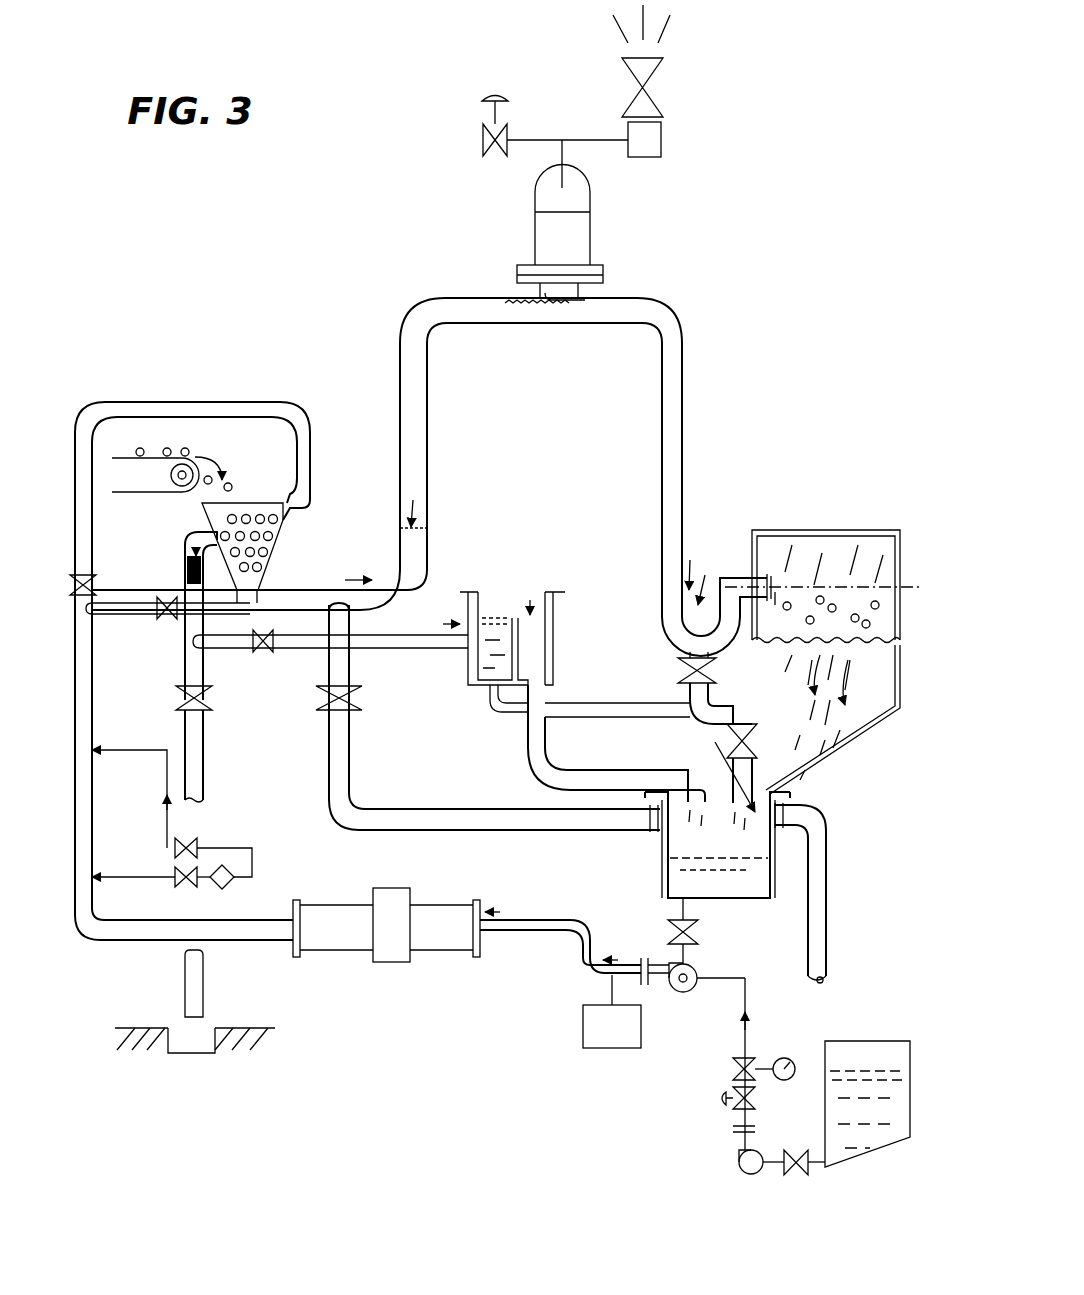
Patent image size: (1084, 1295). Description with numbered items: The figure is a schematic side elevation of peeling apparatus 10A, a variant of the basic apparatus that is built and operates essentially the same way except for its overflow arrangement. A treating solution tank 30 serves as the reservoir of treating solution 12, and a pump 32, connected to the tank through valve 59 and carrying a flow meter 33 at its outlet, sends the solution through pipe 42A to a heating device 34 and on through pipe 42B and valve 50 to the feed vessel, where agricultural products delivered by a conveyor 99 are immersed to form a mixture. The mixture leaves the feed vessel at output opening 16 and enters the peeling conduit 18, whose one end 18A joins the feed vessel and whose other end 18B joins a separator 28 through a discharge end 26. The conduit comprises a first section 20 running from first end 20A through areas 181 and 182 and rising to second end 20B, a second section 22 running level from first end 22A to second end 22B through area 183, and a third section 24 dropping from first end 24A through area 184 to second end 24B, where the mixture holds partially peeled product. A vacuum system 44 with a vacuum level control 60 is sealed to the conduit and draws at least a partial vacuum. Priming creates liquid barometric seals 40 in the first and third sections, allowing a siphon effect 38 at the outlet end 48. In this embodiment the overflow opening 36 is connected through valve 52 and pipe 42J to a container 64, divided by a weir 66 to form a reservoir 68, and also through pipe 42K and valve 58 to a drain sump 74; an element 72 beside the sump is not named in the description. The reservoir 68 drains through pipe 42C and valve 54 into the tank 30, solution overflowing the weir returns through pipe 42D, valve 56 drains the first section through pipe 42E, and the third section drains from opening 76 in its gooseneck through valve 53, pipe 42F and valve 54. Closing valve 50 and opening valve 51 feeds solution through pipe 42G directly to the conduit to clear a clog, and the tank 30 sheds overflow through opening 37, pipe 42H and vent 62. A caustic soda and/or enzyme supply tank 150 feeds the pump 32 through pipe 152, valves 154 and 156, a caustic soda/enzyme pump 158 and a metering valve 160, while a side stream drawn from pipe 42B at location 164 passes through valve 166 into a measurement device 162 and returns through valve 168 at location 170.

The peeling apparatus 10A is at (258, 312).
The treating solution 12 is at (260, 400).
The output opening 16 is at (230, 618).
The peeling conduit 18 is at (393, 320).
The one end of peeling conduit 18A is at (307, 584).
The other end of peeling conduit 18B is at (652, 622).
The first section 20 is at (388, 456).
The first end of first section 20A is at (266, 575).
The second end of first section 20B is at (395, 352).
The second section 22 is at (458, 290).
The first end of second section 22A is at (427, 297).
The second end of second section 22B is at (682, 298).
The third section 24 is at (690, 385).
The first end of third section 24A is at (688, 327).
The second end of third section 24B is at (740, 640).
The discharge end 26 is at (738, 575).
The separator 28 is at (880, 530).
The treating solution tank 30 is at (728, 875).
The pump 32 is at (692, 986).
The flow meter 33 is at (641, 1030).
The heating device 34 is at (345, 940).
The overflow opening 36 is at (210, 540).
The opening 37 is at (792, 815).
The siphon effect 38 is at (740, 565).
The liquid barometric seal 40 is at (408, 525).
The pipe 42A is at (558, 920).
The pipe 42B is at (95, 812).
The pipe 42C is at (677, 714).
The pipe 42D is at (528, 762).
The pipe 42E is at (350, 781).
The pipe 42F is at (719, 747).
The pipe 42G is at (103, 612).
The pipe 42H is at (830, 895).
The pipe 42J is at (413, 643).
The pipe 42K is at (205, 780).
The vacuum system 44 is at (630, 182).
The outlet end 48 is at (790, 582).
The valve 50 is at (97, 583).
The valve 51 is at (157, 620).
The valve 52 is at (275, 648).
The valve 53 is at (712, 675).
The valve 54 is at (727, 744).
The valve 56 is at (364, 698).
The valve 58 is at (208, 705).
The valve 59 is at (668, 932).
The vacuum level control 60 is at (490, 97).
The vent 62 is at (828, 945).
The container 64 is at (495, 580).
The weir 66 is at (506, 600).
The reservoir 68 is at (496, 603).
The probe 72 is at (210, 994).
The drain sump 74 is at (208, 1032).
The opening 76 is at (712, 655).
The conveyor 99 is at (152, 445).
The caustic soda and/or enzyme supply tank 150 is at (870, 1041).
The pipe 152 is at (748, 1045).
The valve 154 is at (797, 1150).
The valve 156 is at (720, 1099).
The caustic soda/enzyme pump 158 is at (738, 1158).
The metering valve 160 is at (733, 1066).
The measurement device 162 is at (240, 882).
The location 164 is at (95, 877).
The valve 166 is at (182, 889).
The valve 168 is at (193, 843).
The location 170 is at (95, 750).
The area 181 is at (327, 505).
The area 182 is at (430, 462).
The area 183 is at (512, 250).
The area 184 is at (700, 427).